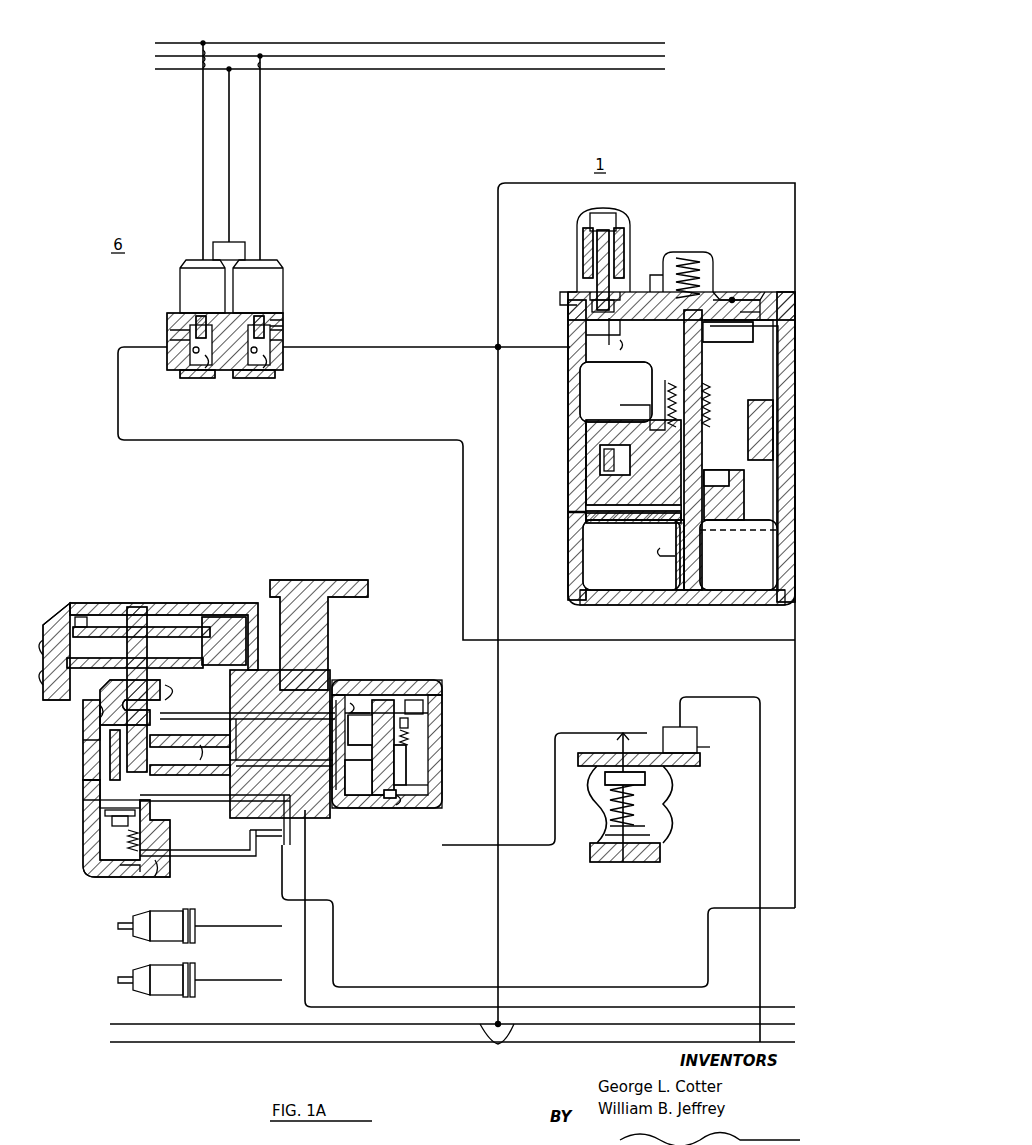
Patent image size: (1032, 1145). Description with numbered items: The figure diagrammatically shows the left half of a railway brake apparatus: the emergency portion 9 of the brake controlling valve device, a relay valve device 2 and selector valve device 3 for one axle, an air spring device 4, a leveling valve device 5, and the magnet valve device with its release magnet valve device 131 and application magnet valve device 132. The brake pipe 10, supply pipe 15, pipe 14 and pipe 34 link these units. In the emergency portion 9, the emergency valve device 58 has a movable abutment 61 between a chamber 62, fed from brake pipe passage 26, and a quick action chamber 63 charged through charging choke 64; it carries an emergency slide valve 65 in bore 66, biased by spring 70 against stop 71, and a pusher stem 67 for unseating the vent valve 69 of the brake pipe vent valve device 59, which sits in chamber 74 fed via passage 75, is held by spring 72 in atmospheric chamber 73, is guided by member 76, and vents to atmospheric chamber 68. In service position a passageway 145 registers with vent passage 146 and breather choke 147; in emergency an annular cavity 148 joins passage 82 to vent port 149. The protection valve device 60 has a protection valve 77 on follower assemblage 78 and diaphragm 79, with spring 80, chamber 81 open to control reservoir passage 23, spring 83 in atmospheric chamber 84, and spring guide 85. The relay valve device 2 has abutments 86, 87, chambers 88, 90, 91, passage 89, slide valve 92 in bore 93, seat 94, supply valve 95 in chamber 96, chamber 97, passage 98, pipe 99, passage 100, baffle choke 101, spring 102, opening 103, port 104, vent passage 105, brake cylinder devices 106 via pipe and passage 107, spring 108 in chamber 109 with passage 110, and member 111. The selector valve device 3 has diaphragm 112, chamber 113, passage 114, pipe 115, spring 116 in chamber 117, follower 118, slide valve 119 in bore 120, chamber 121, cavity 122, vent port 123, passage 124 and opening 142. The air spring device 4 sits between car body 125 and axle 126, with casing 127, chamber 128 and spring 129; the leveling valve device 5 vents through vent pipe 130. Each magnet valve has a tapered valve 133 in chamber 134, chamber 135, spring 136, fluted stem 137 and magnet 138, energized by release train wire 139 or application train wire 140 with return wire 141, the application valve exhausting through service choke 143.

The relay valve device 2 is at (124, 600).
The selector valve device 3 is at (373, 674).
The air spring device 4 is at (672, 799).
The control or leveling valve device 5 is at (672, 727).
The emergency portion 9 is at (560, 554).
The brake pipe 10 is at (497, 340).
The pipe 14 is at (290, 440).
The supply pipe 15 is at (736, 697).
The control reservoir passage 23 is at (780, 310).
The brake pipe passage 26 is at (764, 430).
The pipe 34 is at (306, 880).
The emergency valve device 58 is at (568, 452).
The brake pipe vent valve device 59 is at (738, 284).
The protection valve device 60 is at (573, 256).
The movable abutment 61 is at (622, 455).
The chamber 62 is at (645, 418).
The quick action chamber 63 is at (590, 598).
The charging choke 64 is at (600, 475).
The emergency slide valve 65 is at (732, 495).
The bore 66 is at (660, 512).
The pusher stem 67 is at (695, 368).
The atmospheric chamber 68 is at (728, 335).
The vent valve 69 is at (736, 300).
The bias spring 70 is at (712, 400).
The stop 71 is at (690, 606).
The bias spring 72 is at (712, 258).
The atmospheric chamber 73 is at (676, 258).
The chamber 74 is at (742, 312).
The passage 75 is at (748, 336).
The member 76 is at (650, 279).
The protection valve 77 is at (588, 330).
The diaphragm follower assemblage 78 is at (588, 296).
The diaphragm 79 is at (577, 274).
The bias spring 80 is at (592, 308).
The chamber 81 is at (620, 322).
The passage 82 is at (640, 356).
The bias spring 83 is at (618, 230).
The atmospheric chamber 84 is at (624, 244).
The spring guide 85 is at (584, 240).
The movable abutment 86 is at (80, 617).
The movable abutment 87 is at (50, 640).
The chamber 88 is at (200, 625).
The passage 89 is at (295, 713).
The chamber 90 is at (162, 650).
The chamber 91 is at (83, 715).
The slide valve 92 is at (150, 715).
The bore 93 is at (110, 745).
The valve seat 94 is at (100, 808).
The supply valve 95 is at (148, 820).
The chamber 96 is at (140, 835).
The chamber 97 is at (215, 813).
The passage 98 is at (198, 839).
The pipe 99 is at (414, 987).
The passage 100 is at (83, 783).
The baffle choke 101 is at (100, 712).
The bias spring 102 is at (170, 695).
The bore-like opening 103 is at (160, 775).
The radial port 104 is at (160, 742).
The atmospheric vent passage 105 is at (212, 754).
The brake cylinder devices 106 is at (190, 935).
The pipe and passage 107 is at (282, 836).
The bias spring 108 is at (135, 877).
The chamber 109 is at (160, 872).
The passage 110 is at (83, 848).
The member 111 is at (145, 848).
The diaphragm 112 is at (430, 702).
The chamber 113 is at (362, 700).
The passage 114 is at (330, 713).
The pipe 115 is at (623, 733).
The bias spring 116 is at (412, 735).
The atmospheric chamber 117 is at (412, 720).
The diaphragm follower 118 is at (414, 700).
The selector slide valve 119 is at (394, 735).
The bore 120 is at (410, 790).
The chamber 121 is at (400, 800).
The annular cavity 122 is at (408, 765).
The atmospheric vent port 123 is at (353, 778).
The passage 124 is at (358, 734).
The car body 125 is at (578, 762).
The axle 126 is at (610, 862).
The casing 127 is at (664, 822).
The chamber 128 is at (662, 840).
The helical spring 129 is at (598, 815).
The vent pipe 130 is at (710, 747).
The release magnet valve device 131 is at (180, 293).
The application magnet valve device 132 is at (284, 282).
The tapered valve 133 is at (180, 360).
The chamber 134 is at (230, 372).
The chamber 135 is at (190, 319).
The helical spring 136 is at (198, 372).
The fluted valve stem 137 is at (185, 338).
The magnet 138 is at (185, 274).
The release train wire 139 is at (203, 43).
The application train wire 140 is at (262, 55).
The return wire 141 is at (448, 70).
The opening 142 is at (388, 800).
The service choke 143 is at (284, 325).
The passageway 145 is at (738, 520).
The vent passage 146 is at (603, 520).
The breather choke 147 is at (568, 512).
The annular cavity 148 is at (676, 570).
The atmospheric vent port 149 is at (658, 556).